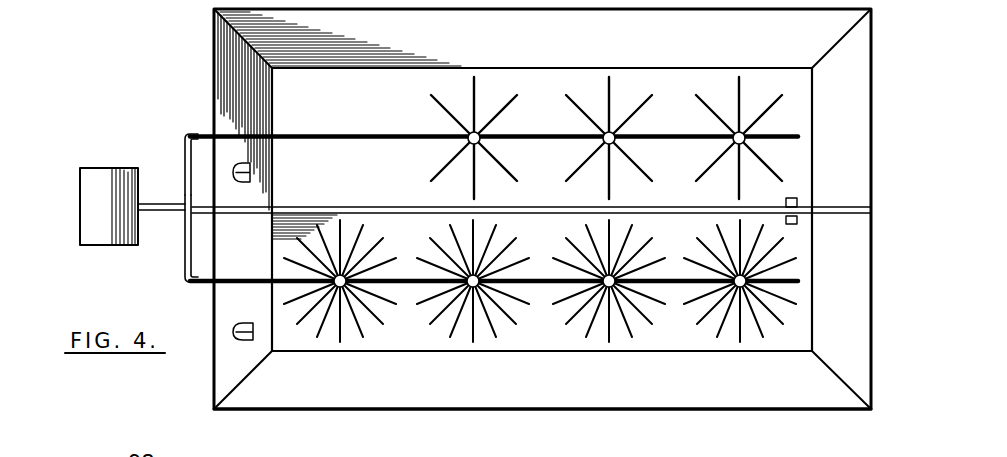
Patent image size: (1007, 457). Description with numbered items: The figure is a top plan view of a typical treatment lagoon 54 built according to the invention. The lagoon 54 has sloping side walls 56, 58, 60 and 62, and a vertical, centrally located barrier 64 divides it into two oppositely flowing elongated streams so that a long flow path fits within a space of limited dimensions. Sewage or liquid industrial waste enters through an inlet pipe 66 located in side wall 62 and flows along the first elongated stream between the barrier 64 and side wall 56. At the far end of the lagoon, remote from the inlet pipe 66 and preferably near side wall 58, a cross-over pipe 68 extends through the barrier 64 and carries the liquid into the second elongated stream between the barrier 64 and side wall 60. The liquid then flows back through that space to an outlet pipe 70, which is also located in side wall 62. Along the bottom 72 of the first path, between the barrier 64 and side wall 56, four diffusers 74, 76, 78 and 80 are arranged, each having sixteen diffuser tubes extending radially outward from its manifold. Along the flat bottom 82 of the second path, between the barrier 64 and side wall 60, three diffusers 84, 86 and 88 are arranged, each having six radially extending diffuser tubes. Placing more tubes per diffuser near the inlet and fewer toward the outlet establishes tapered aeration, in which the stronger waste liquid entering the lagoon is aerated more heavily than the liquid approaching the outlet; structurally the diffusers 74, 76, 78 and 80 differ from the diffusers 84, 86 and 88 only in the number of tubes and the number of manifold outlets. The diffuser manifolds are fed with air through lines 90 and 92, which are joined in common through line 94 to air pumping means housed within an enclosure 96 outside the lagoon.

The lagoon 54 is at (368, 411).
The side wall 56 is at (462, 392).
The side wall 58 is at (860, 298).
The side wall 60 is at (545, 40).
The side wall 62 is at (227, 100).
The barrier 64 is at (387, 205).
The inlet pipe 66 is at (245, 323).
The cross-over pipe 68 is at (798, 199).
The outlet pipe 70 is at (250, 170).
The bottom 72 is at (546, 342).
The diffuser 74 is at (367, 332).
The diffuser 76 is at (497, 332).
The diffuser 78 is at (633, 332).
The diffuser 80 is at (764, 328).
The flat bottom 82 is at (361, 98).
The diffuser 84 is at (742, 100).
The diffuser 86 is at (612, 100).
The diffuser 88 is at (477, 100).
The air line 90 is at (200, 284).
The air line 92 is at (206, 132).
The air line 94 is at (146, 212).
The enclosure 96 is at (92, 247).